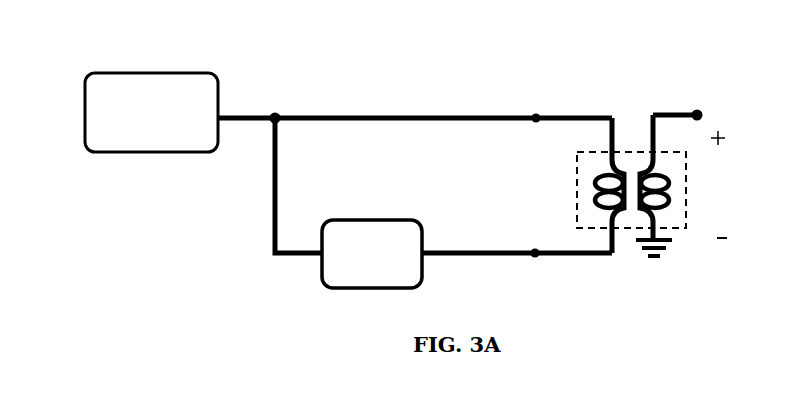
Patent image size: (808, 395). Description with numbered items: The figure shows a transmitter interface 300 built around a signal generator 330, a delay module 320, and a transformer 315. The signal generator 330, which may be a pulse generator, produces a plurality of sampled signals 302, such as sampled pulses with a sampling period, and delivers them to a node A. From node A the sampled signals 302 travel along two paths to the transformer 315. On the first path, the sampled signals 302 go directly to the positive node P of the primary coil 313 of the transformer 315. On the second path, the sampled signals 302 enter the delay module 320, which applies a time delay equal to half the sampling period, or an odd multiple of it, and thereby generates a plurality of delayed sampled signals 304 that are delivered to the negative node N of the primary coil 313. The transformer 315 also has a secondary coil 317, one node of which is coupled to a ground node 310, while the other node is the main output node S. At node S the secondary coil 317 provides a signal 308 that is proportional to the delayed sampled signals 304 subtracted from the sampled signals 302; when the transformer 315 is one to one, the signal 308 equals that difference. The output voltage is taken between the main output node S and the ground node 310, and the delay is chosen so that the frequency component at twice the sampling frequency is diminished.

The transmitter interface 300 is at (613, 55).
The sampled signals 302 is at (252, 115).
The delayed sampled signals 304 is at (508, 251).
The signal 308 is at (673, 112).
The ground node 310 is at (667, 252).
The primary coil 313 is at (596, 187).
The transformer 315 is at (575, 172).
The secondary coil 317 is at (658, 173).
The delay module 320 is at (385, 218).
The signal generator 330 is at (151, 112).